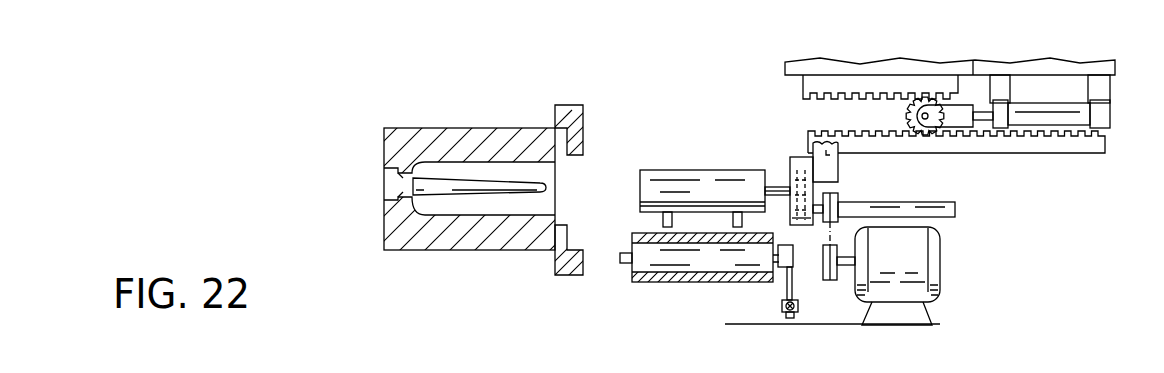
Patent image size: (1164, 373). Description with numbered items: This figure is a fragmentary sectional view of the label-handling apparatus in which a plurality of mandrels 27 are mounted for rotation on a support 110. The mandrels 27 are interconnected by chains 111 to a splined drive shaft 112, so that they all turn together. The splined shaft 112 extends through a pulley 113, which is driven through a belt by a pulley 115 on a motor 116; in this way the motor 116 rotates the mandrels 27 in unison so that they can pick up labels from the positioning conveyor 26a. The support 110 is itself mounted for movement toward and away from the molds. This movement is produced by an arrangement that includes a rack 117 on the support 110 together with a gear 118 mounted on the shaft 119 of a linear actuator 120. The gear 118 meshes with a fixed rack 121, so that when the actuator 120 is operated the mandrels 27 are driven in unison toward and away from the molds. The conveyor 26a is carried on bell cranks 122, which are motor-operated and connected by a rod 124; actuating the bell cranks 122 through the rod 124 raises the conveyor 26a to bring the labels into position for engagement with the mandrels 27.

The positioning conveyor 26a is at (638, 233).
The mandrel 27 is at (705, 177).
The support 110 is at (792, 160).
The chains 111 is at (787, 170).
The splined drive shaft 112 is at (955, 206).
The pulley 113 is at (836, 193).
The pulley 115 is at (837, 277).
The motor 116 is at (915, 266).
The rack 117 is at (977, 146).
The gear 118 is at (928, 94).
The shaft 119 is at (983, 108).
The linear actuator 120 is at (1037, 100).
The fixed rack 121 is at (838, 82).
The bell crank 122 is at (793, 284).
The rod 124 is at (782, 303).